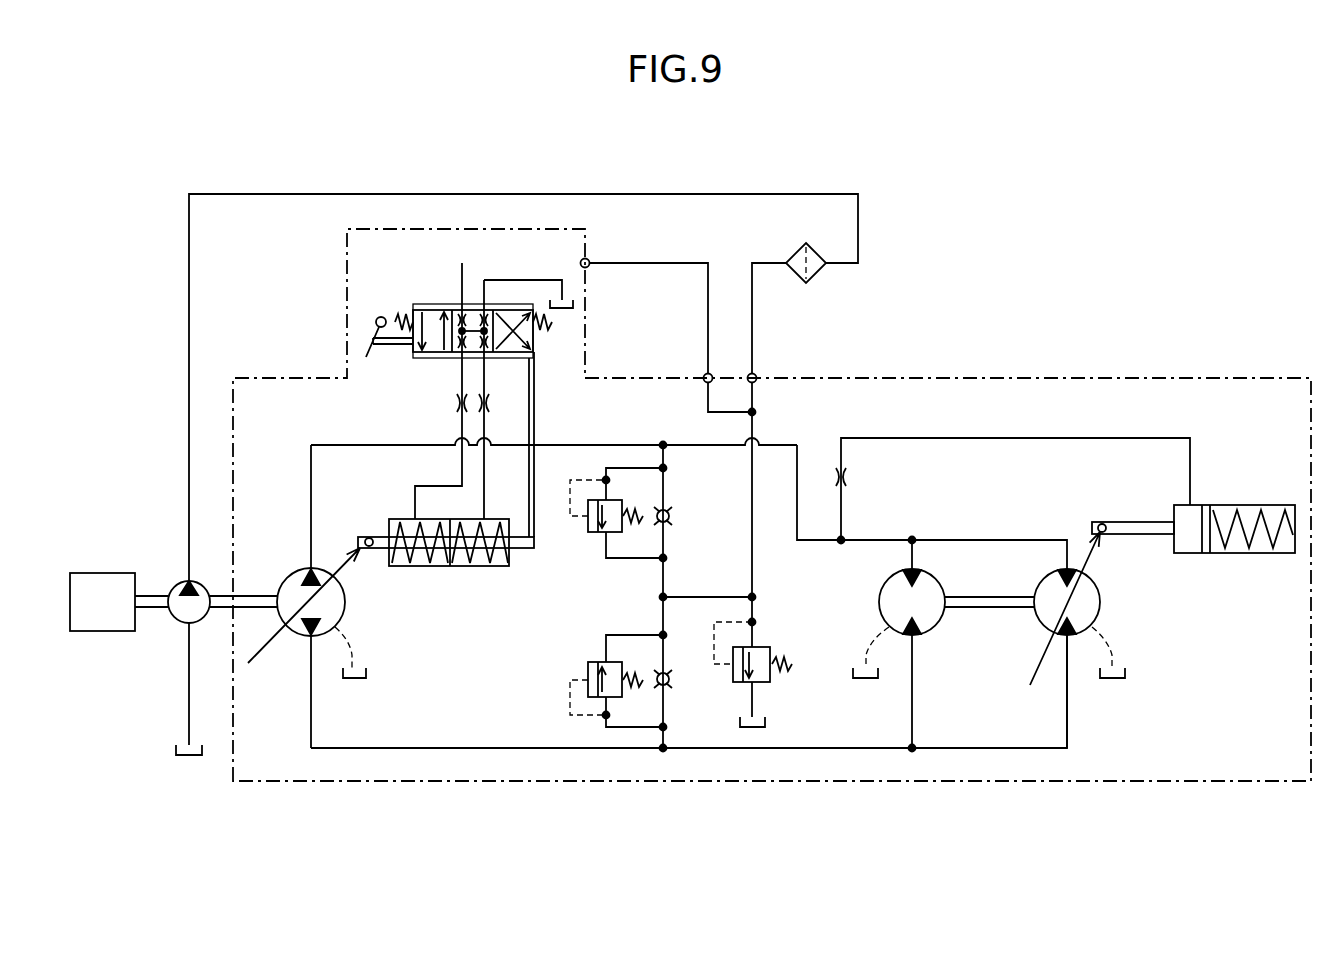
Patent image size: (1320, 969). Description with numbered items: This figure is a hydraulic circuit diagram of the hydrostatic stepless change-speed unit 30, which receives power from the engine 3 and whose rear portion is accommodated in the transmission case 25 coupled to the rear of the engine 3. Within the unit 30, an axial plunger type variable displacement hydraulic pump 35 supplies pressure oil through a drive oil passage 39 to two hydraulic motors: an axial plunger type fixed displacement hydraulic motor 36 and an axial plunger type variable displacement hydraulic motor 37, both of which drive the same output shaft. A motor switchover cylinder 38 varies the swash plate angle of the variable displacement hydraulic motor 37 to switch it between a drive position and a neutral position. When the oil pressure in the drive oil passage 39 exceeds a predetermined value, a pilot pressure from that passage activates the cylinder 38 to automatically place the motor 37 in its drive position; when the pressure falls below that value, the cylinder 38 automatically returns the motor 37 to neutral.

The engine 3 is at (102, 602).
The transmission case 25 is at (903, 378).
The hydrostatic stepless change-speed unit 30 is at (1048, 410).
The variable displacement hydraulic pump 35 is at (292, 574).
The fixed displacement hydraulic motor 36 is at (878, 600).
The variable displacement hydraulic motor 37 is at (1100, 607).
The motor switchover cylinder 38 is at (1240, 505).
The drive oil passage 39 is at (797, 477).